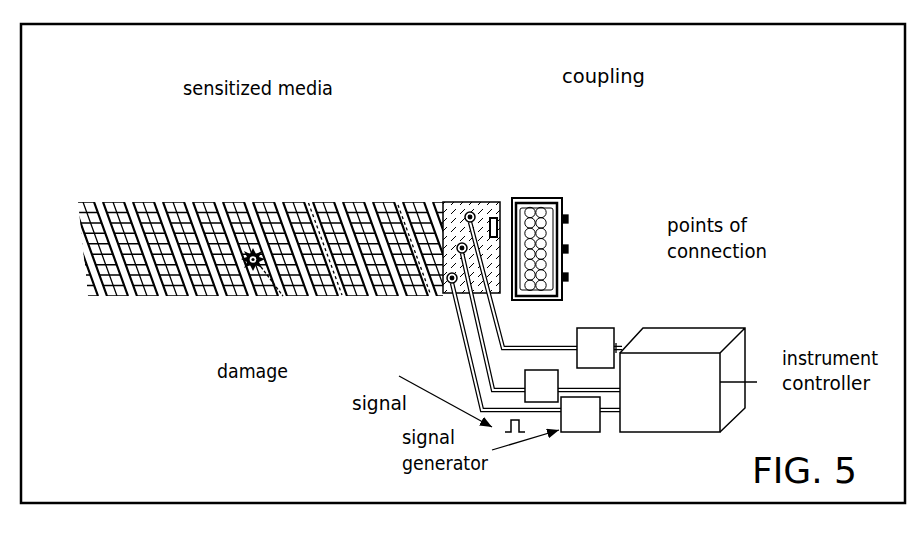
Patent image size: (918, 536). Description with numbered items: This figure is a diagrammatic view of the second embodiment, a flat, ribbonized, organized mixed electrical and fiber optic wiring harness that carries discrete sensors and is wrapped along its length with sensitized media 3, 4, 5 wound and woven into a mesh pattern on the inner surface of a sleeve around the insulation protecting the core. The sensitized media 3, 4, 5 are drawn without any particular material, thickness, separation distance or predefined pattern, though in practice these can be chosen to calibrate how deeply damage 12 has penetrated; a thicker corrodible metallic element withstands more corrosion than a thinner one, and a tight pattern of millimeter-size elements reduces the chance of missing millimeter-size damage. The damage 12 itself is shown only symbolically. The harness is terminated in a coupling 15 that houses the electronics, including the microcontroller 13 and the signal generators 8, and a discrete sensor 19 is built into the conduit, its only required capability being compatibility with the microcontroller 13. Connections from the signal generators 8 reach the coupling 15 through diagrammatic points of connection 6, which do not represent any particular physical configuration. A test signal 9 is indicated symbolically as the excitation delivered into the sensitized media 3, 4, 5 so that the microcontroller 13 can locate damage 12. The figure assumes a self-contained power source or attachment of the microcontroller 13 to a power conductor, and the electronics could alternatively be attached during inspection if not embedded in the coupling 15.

The sensitized media 3 is at (265, 212).
The sensitized media 4 is at (242, 201).
The sensitized media 5 is at (283, 201).
The points of connection 6 is at (448, 270).
The signal generators 8 is at (537, 327).
The test signal 9 is at (422, 249).
The damage 12 is at (254, 298).
The microcontroller 13 is at (682, 380).
The coupling 15 is at (488, 200).
The discrete sensor 19 is at (499, 214).